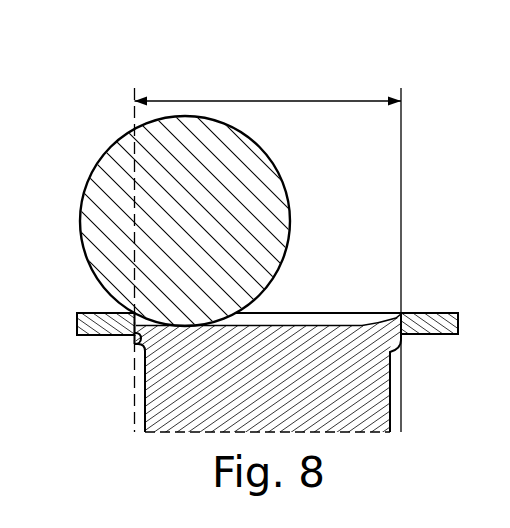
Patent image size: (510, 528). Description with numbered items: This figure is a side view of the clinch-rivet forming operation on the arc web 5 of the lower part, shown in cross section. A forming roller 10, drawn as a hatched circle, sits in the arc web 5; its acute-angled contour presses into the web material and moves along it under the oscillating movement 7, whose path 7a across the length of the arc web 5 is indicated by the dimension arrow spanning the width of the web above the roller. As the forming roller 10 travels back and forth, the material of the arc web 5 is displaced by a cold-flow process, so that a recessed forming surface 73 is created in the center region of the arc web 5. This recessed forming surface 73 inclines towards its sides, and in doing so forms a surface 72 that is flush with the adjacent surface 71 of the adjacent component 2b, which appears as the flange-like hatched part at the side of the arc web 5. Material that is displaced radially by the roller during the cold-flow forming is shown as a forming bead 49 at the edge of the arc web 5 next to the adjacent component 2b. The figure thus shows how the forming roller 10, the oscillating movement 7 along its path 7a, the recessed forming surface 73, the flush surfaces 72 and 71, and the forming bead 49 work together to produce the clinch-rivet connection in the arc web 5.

The oscillating movement 7 is at (278, 101).
The path of the oscillating movement 7a is at (268, 260).
The forming roller 10 is at (108, 190).
The adjacent surface 71 is at (90, 312).
The surface 72 is at (353, 311).
The recessed forming surface 73 is at (298, 321).
The adjacent component 2b is at (428, 326).
The arc web 5 is at (378, 408).
The forming bead 49 is at (135, 340).